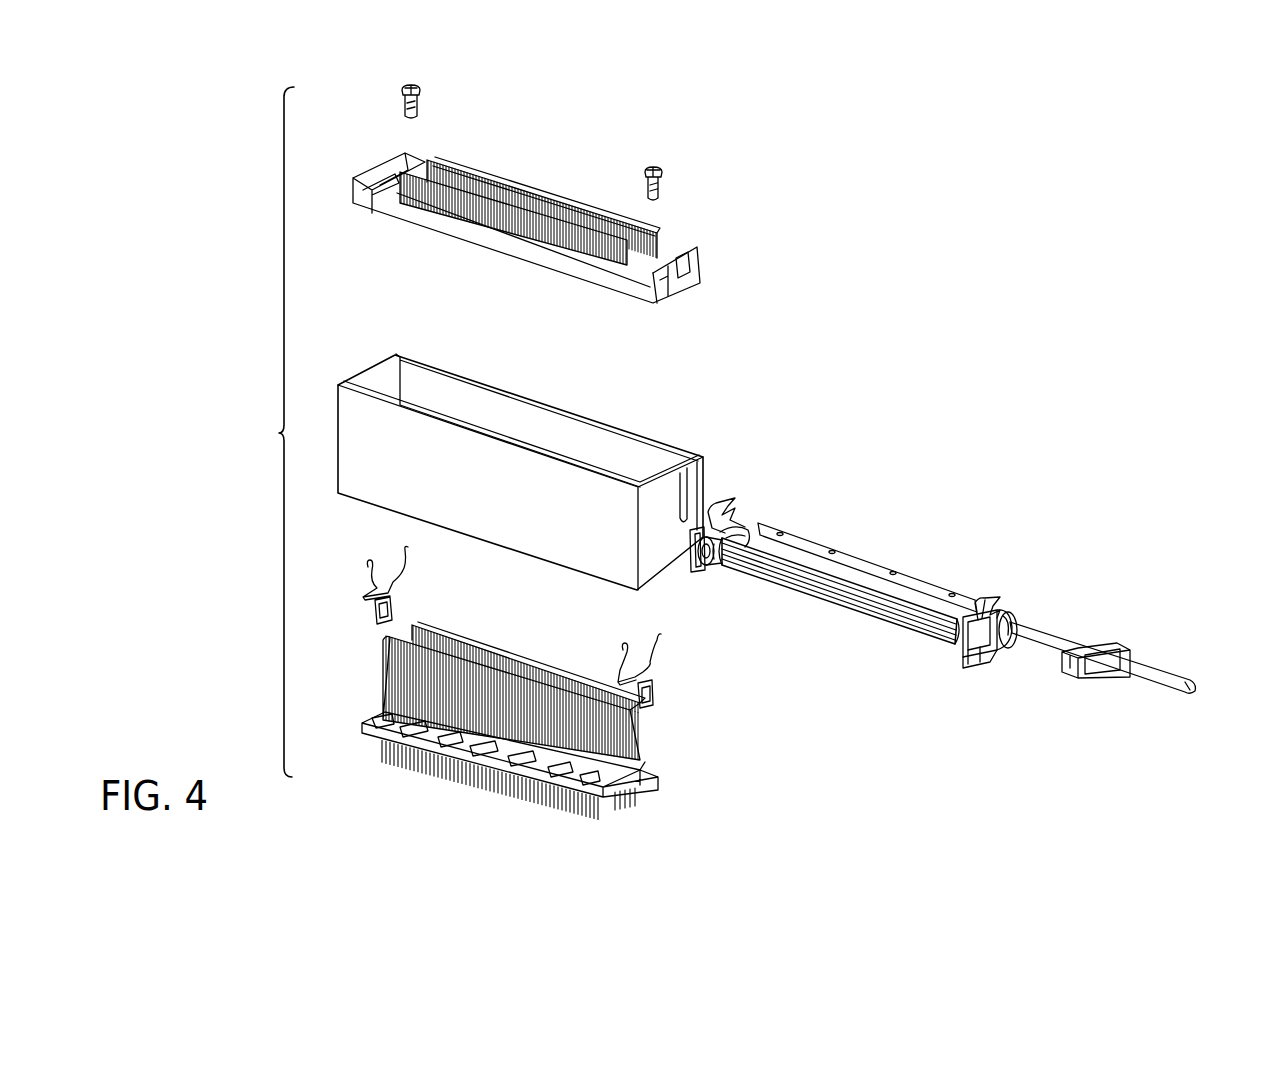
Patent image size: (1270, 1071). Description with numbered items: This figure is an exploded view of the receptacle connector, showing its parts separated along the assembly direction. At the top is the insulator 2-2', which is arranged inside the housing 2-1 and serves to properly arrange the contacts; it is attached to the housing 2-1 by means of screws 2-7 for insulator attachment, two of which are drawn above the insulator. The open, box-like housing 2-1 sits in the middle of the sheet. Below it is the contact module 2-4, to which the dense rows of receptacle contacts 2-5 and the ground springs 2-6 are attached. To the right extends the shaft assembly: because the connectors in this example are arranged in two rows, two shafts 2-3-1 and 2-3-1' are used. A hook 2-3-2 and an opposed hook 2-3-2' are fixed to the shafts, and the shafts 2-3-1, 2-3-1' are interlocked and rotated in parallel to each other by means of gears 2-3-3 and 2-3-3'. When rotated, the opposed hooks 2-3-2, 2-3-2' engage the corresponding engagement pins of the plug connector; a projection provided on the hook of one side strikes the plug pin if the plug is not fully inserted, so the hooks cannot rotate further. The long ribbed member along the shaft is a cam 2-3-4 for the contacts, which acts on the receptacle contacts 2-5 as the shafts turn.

The housing 2-1 is at (602, 402).
The insulator 2-2' is at (526, 198).
The screws for insulator attachment 2-7 is at (663, 180).
The cam for the contacts 2-3-4 is at (867, 560).
The shaft 2-3-1 is at (1102, 639).
The shaft 2-3-1' is at (823, 603).
The hook 2-3-2 is at (1033, 590).
The hook 2-3-2' is at (761, 519).
The gear 2-3-3 is at (1025, 659).
The gear 2-3-3' is at (992, 681).
The ground springs 2-6 is at (665, 657).
The receptacle contacts 2-5 is at (640, 738).
The contact module 2-4 is at (473, 793).